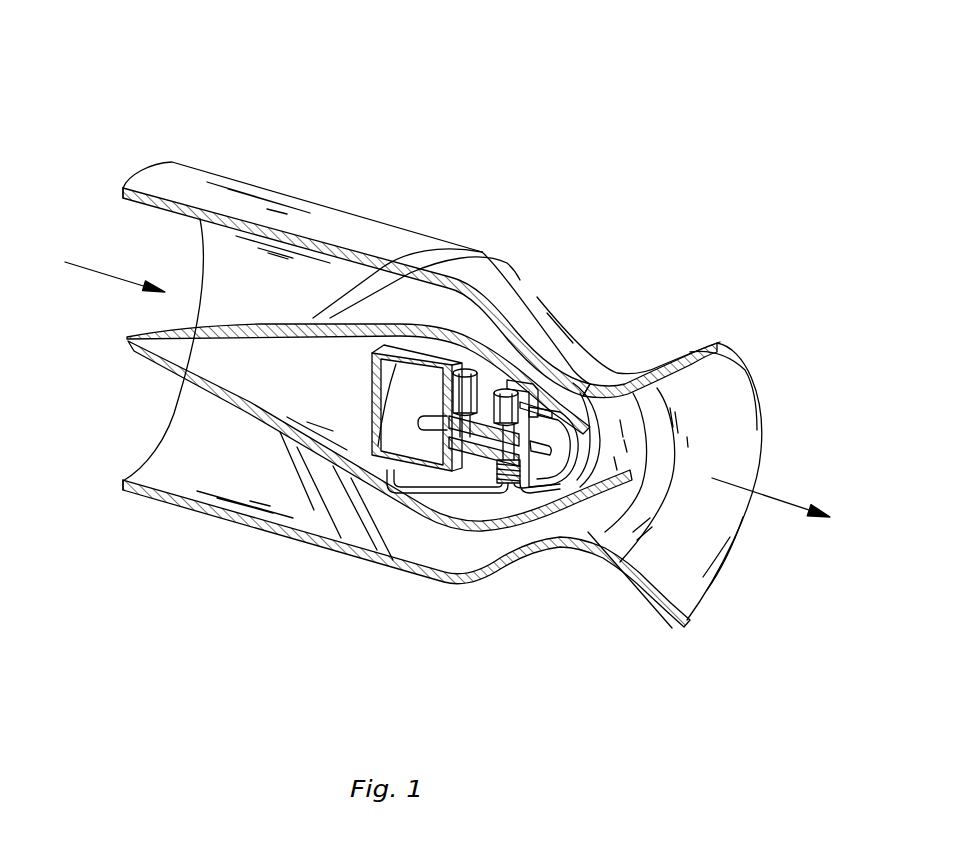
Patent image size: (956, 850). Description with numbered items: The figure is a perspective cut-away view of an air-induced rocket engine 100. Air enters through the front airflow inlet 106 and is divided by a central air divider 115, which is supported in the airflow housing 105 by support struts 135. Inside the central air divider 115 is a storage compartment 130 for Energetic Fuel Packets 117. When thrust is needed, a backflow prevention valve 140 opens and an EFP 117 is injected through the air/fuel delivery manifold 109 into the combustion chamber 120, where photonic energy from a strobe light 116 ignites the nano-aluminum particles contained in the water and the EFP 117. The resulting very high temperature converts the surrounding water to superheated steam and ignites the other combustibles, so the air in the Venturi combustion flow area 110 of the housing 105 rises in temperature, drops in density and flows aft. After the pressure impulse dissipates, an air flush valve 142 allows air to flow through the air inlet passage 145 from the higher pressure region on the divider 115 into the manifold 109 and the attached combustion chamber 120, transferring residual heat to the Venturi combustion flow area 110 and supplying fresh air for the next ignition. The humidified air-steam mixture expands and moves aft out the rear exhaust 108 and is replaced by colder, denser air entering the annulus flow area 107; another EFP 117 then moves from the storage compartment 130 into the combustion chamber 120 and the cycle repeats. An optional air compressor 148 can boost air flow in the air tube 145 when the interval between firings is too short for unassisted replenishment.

The air-induced rocket engine 100 is at (186, 122).
The airflow housing 105 is at (182, 508).
The front airflow inlet 106 is at (137, 460).
The annulus flow area 107 is at (570, 523).
The rear exhaust 108 is at (762, 400).
The air/fuel delivery manifold 109 is at (487, 483).
The Venturi combustion flow area 110 is at (634, 412).
The central air divider 115 is at (155, 363).
The strobe light 116 is at (510, 380).
The Energetic Fuel Packet (EFP) 117 is at (540, 430).
The combustion chamber 120 is at (563, 462).
The storage compartment 130 is at (370, 366).
The support struts 135 is at (314, 510).
The backflow prevention valve 140 is at (460, 373).
The air flush valve 142 is at (497, 390).
The air inlet passage 145 is at (435, 480).
The air compressor 148 is at (507, 490).